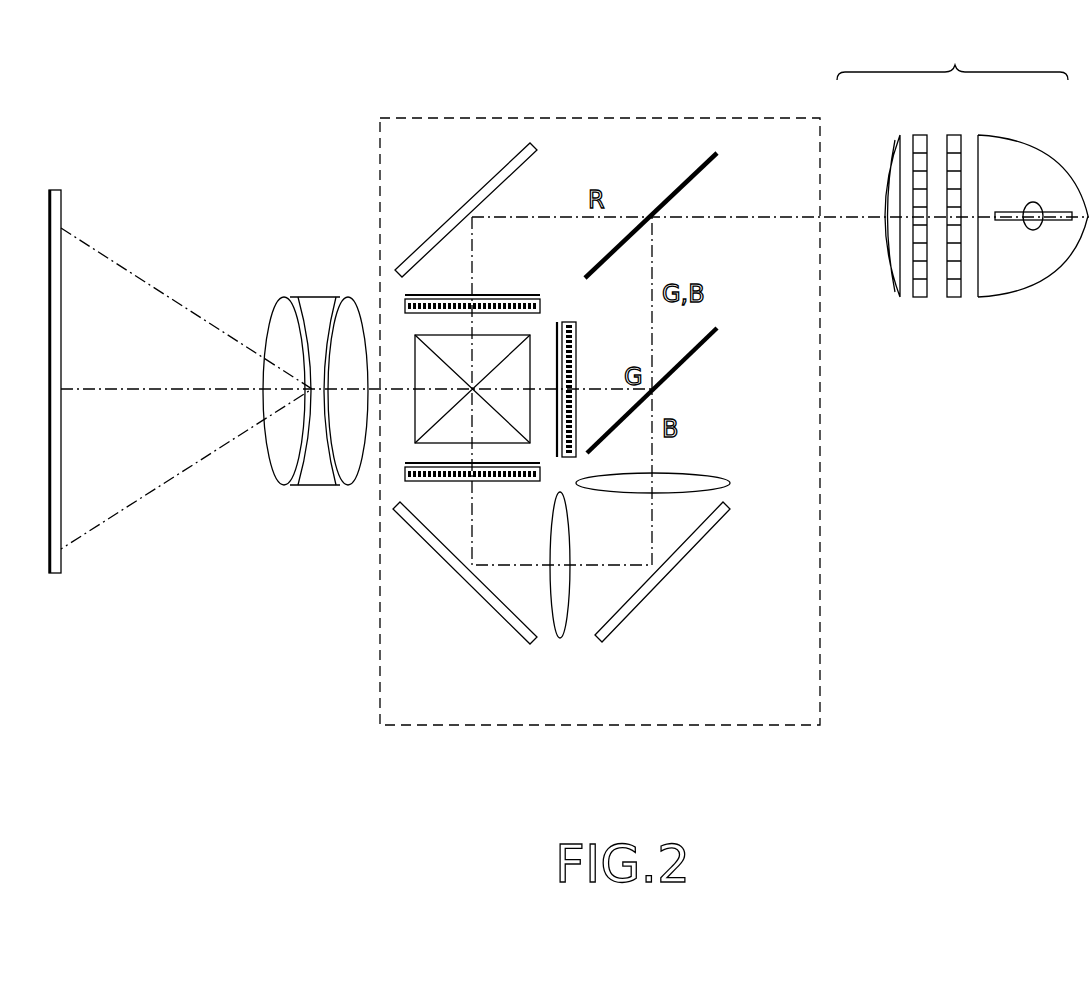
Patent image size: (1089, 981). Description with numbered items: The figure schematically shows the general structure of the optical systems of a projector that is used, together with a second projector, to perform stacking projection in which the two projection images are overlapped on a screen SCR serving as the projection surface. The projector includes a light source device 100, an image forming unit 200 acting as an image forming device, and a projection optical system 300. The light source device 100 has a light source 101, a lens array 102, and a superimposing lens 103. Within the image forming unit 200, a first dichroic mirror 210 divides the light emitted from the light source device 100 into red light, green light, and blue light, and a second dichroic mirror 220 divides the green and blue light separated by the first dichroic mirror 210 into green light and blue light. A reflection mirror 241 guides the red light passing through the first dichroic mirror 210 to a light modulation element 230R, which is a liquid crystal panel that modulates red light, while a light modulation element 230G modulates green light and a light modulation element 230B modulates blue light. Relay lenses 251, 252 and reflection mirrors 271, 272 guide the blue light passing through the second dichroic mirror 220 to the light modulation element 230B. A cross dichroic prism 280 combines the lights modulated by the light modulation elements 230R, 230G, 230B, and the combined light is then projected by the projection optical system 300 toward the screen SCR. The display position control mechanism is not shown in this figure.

The light source device 100 is at (962, 197).
The light source 101 is at (1015, 293).
The lens array 102 is at (953, 133).
The superimposing lens 103 is at (893, 132).
The image forming unit 200 is at (578, 118).
The first dichroic mirror 210 is at (708, 163).
The second dichroic mirror 220 is at (708, 338).
The light modulation element for red light 230R is at (498, 310).
The light modulation element for green light 230G is at (568, 322).
The light modulation element for blue light 230B is at (488, 481).
The reflection mirror 241 is at (462, 208).
The relay lens 251 is at (731, 483).
The relay lens 252 is at (560, 635).
The reflection mirror 271 is at (690, 548).
The reflection mirror 272 is at (480, 588).
The cross dichroic prism 280 is at (413, 337).
The projection optical system 300 is at (358, 297).
The screen SCR is at (61, 210).